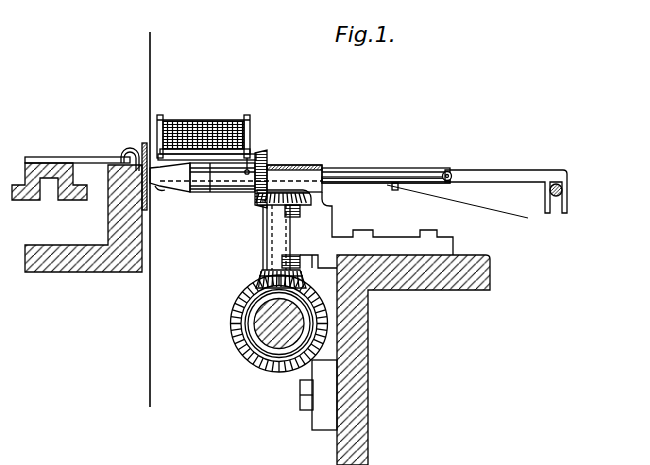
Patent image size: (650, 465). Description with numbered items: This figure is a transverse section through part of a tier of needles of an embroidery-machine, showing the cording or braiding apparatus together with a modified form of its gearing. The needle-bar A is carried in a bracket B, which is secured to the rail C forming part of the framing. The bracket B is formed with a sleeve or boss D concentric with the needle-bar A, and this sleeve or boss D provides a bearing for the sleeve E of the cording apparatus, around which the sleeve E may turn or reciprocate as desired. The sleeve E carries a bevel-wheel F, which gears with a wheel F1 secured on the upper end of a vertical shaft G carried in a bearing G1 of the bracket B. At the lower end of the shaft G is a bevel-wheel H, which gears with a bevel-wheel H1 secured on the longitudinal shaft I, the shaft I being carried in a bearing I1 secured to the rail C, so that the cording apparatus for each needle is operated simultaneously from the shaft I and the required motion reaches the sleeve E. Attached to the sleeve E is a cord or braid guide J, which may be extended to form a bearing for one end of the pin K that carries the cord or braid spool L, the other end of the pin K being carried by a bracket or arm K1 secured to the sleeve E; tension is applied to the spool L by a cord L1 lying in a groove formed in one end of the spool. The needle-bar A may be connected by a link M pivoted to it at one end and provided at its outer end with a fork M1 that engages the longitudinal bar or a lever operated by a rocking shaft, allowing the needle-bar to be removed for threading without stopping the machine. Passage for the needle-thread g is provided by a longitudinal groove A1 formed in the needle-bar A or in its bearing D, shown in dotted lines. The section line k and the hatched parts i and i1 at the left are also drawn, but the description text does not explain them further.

The line of section k is at (155, 50).
The hook i is at (125, 152).
The bracket i1 is at (108, 227).
The cord or braid guide J is at (148, 139).
The cord or braid spool L is at (205, 123).
The pin K is at (230, 123).
The cord L1 is at (250, 126).
The bracket or arm K1 is at (254, 153).
The sleeve E is at (225, 185).
The bevel-wheel F is at (252, 195).
The wheel F1 is at (262, 212).
The sleeve or boss D is at (280, 166).
The shaft G is at (283, 220).
The bearing G1 is at (262, 246).
The bracket B is at (376, 230).
The needle-bar A is at (387, 167).
The longitudinal groove A1 is at (392, 191).
The link M is at (524, 163).
The fork M1 is at (554, 208).
The needle-thread g is at (457, 206).
The bevel-wheel H is at (262, 273).
The bevel-wheel H1 is at (230, 323).
The longitudinal shaft I is at (283, 315).
The bearing I1 is at (311, 405).
The rail C is at (360, 323).